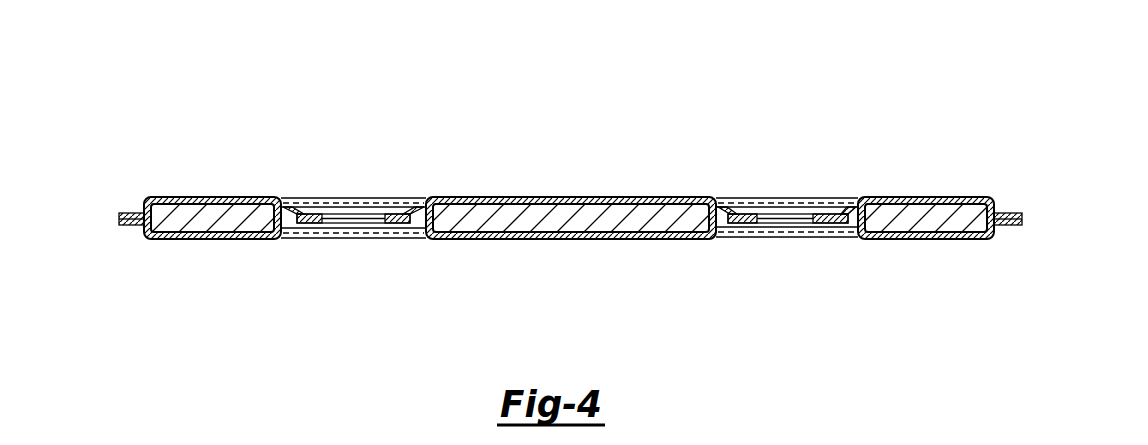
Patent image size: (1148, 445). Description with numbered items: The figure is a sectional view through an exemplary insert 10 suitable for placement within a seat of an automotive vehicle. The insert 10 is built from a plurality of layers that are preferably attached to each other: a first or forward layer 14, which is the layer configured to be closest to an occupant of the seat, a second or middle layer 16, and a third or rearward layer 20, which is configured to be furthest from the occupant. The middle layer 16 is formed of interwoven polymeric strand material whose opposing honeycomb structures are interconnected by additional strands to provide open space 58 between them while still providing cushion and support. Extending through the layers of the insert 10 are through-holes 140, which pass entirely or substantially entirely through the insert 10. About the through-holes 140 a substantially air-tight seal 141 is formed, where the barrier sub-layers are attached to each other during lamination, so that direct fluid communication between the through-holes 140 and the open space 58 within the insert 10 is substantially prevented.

The insert 10 is at (859, 88).
The first or forward layer 14 is at (558, 197).
The second or middle layer 16 is at (625, 215).
The third or rearward layer 20 is at (538, 239).
The open space 58 is at (936, 222).
The through-holes 140 is at (346, 214).
The seal 141 is at (305, 227).